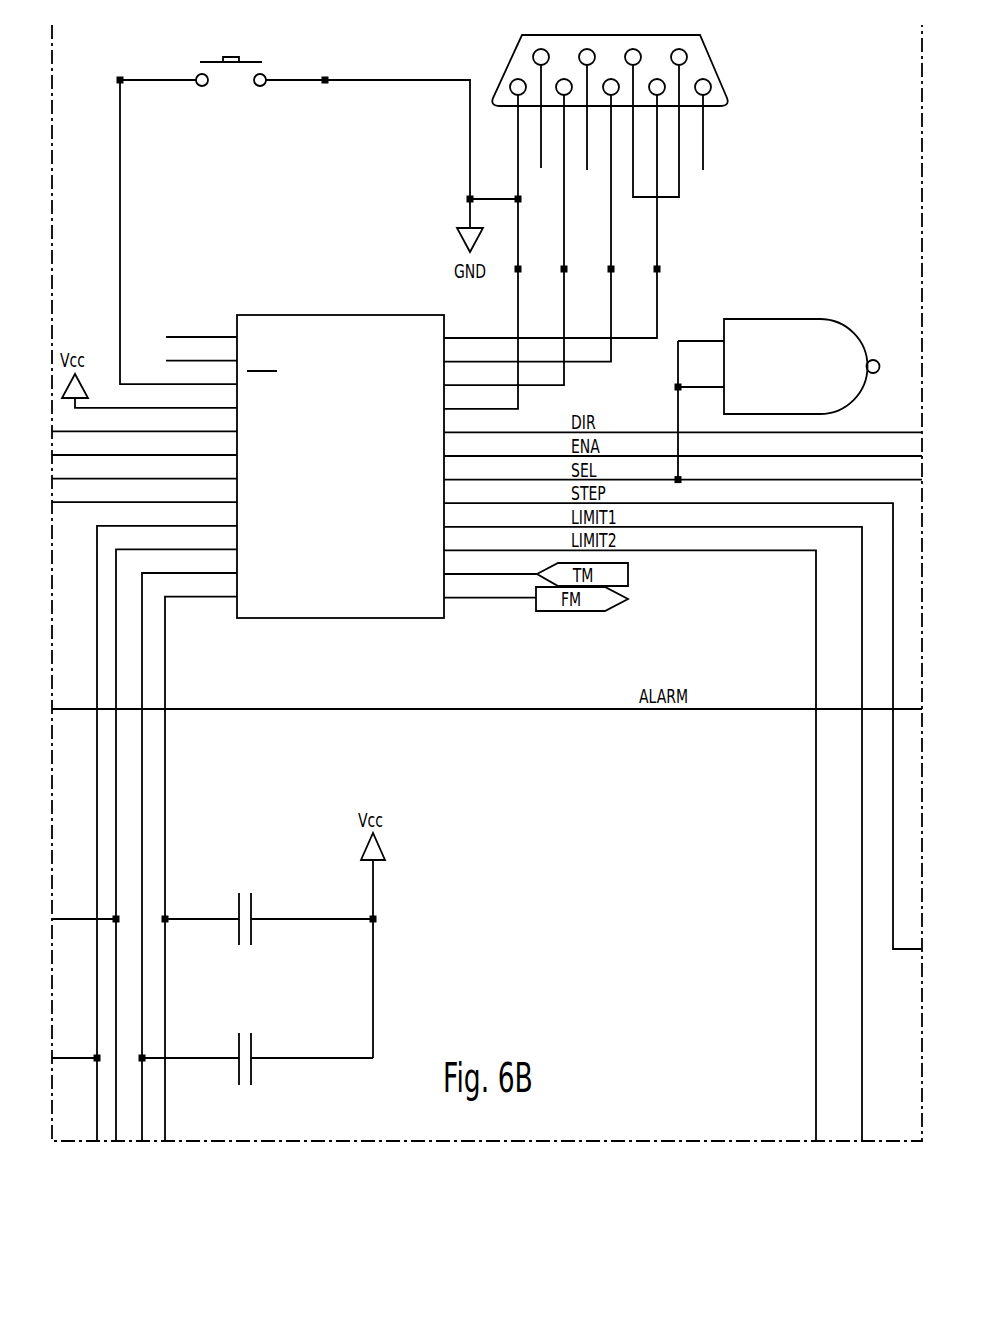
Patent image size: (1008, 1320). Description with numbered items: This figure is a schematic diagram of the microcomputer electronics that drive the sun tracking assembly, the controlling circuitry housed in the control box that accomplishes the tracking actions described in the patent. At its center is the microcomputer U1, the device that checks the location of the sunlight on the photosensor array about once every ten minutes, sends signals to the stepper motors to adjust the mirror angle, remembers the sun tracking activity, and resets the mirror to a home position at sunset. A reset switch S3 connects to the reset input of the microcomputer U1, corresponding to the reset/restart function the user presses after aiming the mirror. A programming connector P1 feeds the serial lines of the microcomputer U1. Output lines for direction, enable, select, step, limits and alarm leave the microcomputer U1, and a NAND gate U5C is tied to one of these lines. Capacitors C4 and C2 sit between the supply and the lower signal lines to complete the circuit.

The reset switch S3 is at (231, 72).
The programming connector P1 is at (643, 116).
The microcontroller U1 is at (319, 449).
The NAND gate U5C is at (786, 384).
The capacitor C4 is at (269, 904).
The capacitor C2 is at (257, 1044).